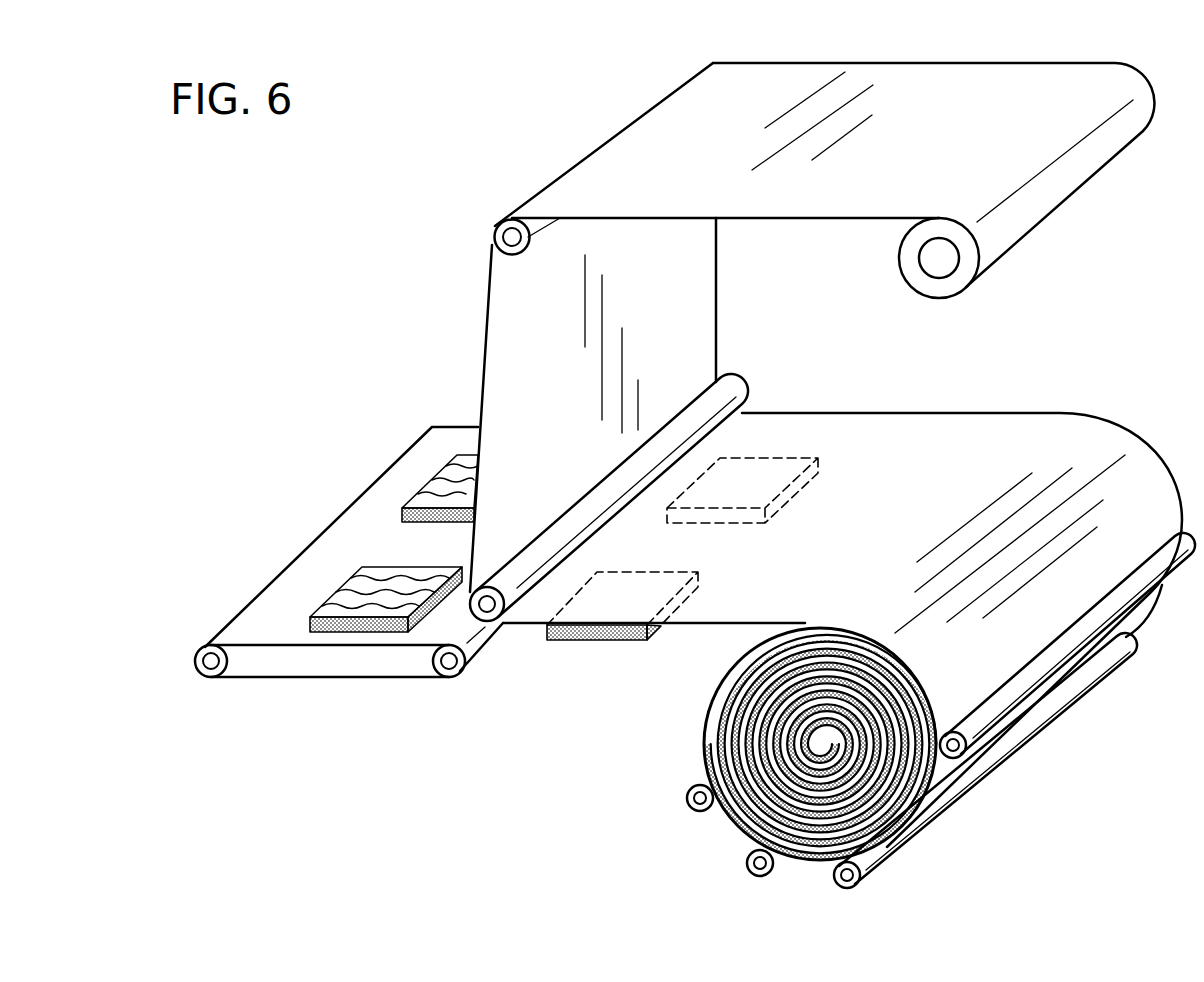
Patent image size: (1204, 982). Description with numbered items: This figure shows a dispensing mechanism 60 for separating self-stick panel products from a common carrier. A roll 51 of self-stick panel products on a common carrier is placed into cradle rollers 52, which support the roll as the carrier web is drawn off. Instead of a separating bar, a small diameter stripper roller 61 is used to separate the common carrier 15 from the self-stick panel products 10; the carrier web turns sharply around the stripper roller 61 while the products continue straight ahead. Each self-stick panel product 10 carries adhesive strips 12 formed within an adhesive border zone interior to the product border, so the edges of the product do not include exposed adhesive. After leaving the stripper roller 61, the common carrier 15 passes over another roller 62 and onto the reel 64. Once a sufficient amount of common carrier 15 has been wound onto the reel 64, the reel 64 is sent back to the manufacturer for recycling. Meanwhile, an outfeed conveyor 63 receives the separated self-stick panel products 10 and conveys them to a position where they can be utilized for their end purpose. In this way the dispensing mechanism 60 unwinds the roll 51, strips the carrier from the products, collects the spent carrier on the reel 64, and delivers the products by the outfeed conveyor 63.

The self-stick panel product 10 is at (310, 627).
The adhesive strips 12 is at (382, 576).
The common carrier 15 is at (741, 103).
The roll 51 is at (880, 843).
The cradle rollers 52 is at (745, 865).
The dispensing mechanism 60 is at (348, 346).
The stripper roller 61 is at (728, 381).
The roller 62 is at (496, 236).
The outfeed conveyor 63 is at (327, 678).
The reel 64 is at (940, 278).